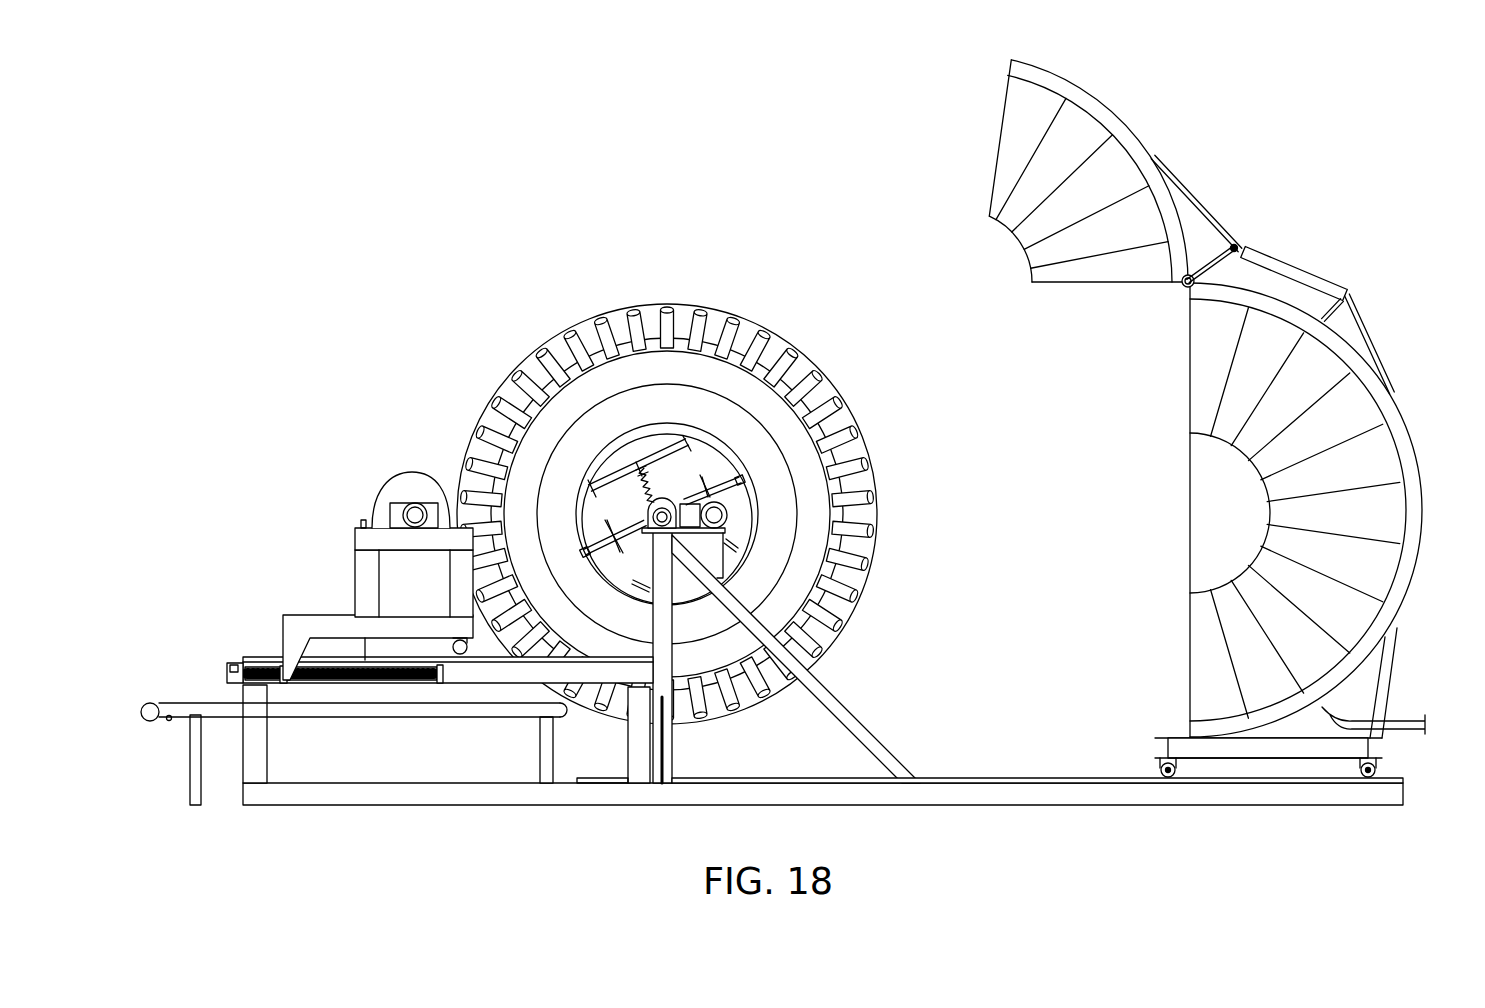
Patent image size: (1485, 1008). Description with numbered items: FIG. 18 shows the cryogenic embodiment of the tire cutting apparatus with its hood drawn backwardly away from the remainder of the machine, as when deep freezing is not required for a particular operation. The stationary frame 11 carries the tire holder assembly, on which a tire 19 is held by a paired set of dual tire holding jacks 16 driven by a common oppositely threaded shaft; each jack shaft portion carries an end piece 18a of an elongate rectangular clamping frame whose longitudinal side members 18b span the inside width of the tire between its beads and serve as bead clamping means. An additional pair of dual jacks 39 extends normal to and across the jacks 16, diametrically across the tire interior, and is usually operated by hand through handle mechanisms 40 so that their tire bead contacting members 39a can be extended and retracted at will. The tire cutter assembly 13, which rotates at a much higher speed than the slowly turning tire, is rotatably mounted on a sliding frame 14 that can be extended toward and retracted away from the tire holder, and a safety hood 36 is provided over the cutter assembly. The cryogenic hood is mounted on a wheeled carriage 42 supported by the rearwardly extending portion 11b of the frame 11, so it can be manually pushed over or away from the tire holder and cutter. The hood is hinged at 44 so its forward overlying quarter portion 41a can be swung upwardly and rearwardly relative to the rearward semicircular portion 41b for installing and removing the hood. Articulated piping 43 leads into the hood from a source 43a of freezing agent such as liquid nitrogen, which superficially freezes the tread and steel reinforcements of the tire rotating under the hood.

The stationary frame 11 is at (637, 737).
The rearwardly extending portion of frame 11b is at (1095, 778).
The tire cutter assembly 13 is at (415, 468).
The sliding frame 14 is at (360, 592).
The dual tire holding jacks 16 is at (652, 446).
The end piece of clamping frame 18a is at (612, 465).
The longitudinal side members of clamping frame 18b is at (690, 446).
The tire 19 is at (657, 308).
The hood 36 is at (378, 495).
The additional pair of dual jacks 39 is at (705, 470).
The tire bead contacting members 39a is at (745, 479).
The handle mechanisms 40 is at (703, 503).
The forward overlying quarter portion of hood 41a is at (1118, 127).
The rearward semi-circular portion of hood 41b is at (1420, 506).
The wheeled carriage 42 is at (1302, 752).
The articulated piping 43 is at (1232, 202).
The source of freezing agent 43a is at (1405, 718).
The hinge 44 is at (1176, 290).